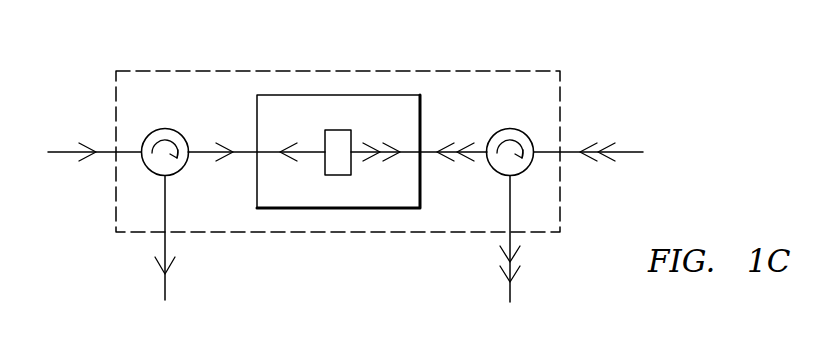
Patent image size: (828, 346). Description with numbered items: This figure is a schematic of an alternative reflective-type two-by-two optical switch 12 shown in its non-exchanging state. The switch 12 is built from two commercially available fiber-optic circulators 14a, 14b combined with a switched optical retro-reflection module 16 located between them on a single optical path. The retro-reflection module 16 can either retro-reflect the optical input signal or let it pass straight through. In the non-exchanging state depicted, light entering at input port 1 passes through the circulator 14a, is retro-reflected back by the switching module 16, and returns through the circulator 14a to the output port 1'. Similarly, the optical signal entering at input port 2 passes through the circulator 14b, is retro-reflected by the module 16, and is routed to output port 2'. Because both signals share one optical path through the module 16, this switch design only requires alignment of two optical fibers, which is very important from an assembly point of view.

The reflective-type 2×2 optical switch 12 is at (317, 70).
The switched optical retro-reflection module 16 is at (309, 125).
The FO-circulator 14a is at (165, 128).
The FO-circulator 14b is at (512, 128).
The input port 1 is at (85, 153).
The input port 2 is at (604, 153).
The output port 1' is at (170, 255).
The output port 2' is at (514, 256).